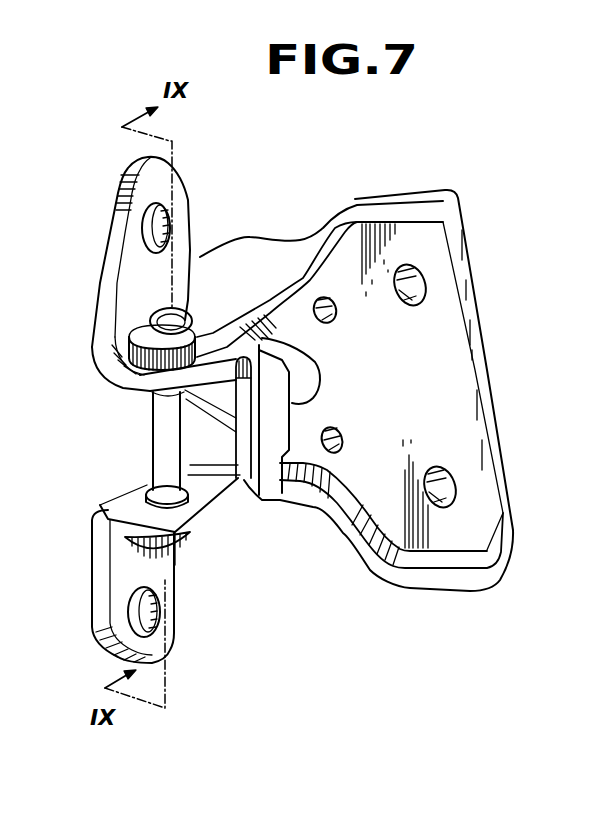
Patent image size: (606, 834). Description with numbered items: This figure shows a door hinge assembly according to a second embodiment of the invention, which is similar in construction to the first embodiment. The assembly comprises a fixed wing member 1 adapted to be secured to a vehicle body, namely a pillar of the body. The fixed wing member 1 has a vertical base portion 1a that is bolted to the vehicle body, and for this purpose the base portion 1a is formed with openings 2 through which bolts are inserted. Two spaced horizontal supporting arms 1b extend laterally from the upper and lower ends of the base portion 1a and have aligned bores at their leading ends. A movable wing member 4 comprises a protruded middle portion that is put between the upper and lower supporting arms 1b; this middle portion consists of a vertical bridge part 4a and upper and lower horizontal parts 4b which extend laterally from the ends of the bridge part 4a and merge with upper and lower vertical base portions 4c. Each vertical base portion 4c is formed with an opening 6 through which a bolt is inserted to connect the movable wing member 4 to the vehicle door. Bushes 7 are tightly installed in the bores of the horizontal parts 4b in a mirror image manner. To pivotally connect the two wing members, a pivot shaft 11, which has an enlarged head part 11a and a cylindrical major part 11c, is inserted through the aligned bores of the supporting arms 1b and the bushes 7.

The fixed wing member 1 is at (485, 362).
The vertical base portion 1a is at (485, 523).
The horizontal supporting arm 1b is at (192, 258).
The opening 2 is at (427, 285).
The movable wing member 4 is at (97, 347).
The vertical bridge part 4a is at (277, 407).
The horizontal part 4b is at (123, 386).
The vertical base portion 4c is at (130, 277).
The opening 6 is at (143, 213).
The bush 7 is at (157, 389).
The pivot shaft 11 is at (150, 479).
The enlarged head part 11a is at (129, 314).
The cylindrical major part 11c is at (168, 442).